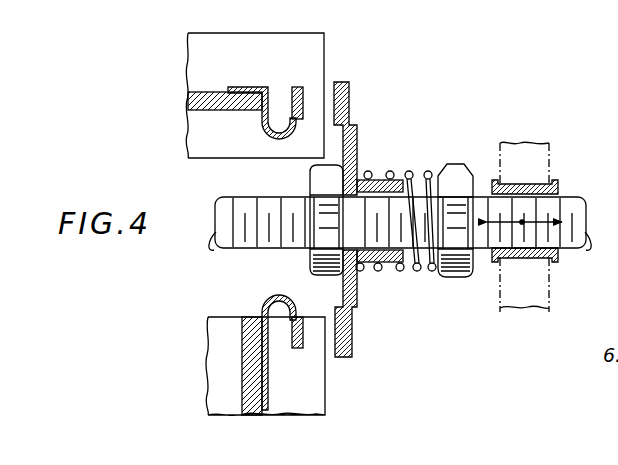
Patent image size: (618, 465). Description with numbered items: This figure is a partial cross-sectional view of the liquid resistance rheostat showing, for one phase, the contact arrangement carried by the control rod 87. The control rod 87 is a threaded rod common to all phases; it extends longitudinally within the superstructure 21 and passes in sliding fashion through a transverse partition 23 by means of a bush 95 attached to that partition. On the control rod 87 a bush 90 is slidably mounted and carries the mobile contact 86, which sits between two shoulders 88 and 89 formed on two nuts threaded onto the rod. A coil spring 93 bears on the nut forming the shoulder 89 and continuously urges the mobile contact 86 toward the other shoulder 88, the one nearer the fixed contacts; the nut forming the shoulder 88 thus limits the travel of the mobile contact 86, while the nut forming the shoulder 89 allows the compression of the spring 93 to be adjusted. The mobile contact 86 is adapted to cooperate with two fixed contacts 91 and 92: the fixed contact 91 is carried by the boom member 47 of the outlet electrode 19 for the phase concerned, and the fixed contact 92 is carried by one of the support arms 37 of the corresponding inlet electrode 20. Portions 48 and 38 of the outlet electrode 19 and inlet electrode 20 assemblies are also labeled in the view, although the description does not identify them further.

The outlet electrode 19 is at (206, 84).
The wall of first support member 48 is at (191, 59).
The boom member 47 is at (192, 122).
The fixed contact 91 is at (300, 68).
The inlet electrode 20 is at (204, 360).
The wall of second support member 38 is at (216, 320).
The support arm 37 is at (246, 318).
The fixed contact 92 is at (294, 365).
The control rod 87 is at (212, 250).
The shoulder 88 is at (311, 193).
The shoulder 89 is at (445, 168).
The mobile contact 86 is at (366, 125).
The bush 90 is at (383, 271).
The coil spring 93 is at (410, 171).
The bush 95 is at (558, 184).
The superstructure 21 is at (544, 196).
The transverse partition 23 is at (526, 140).